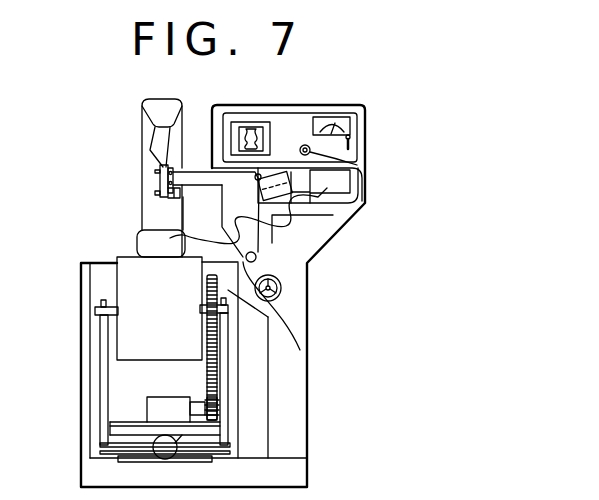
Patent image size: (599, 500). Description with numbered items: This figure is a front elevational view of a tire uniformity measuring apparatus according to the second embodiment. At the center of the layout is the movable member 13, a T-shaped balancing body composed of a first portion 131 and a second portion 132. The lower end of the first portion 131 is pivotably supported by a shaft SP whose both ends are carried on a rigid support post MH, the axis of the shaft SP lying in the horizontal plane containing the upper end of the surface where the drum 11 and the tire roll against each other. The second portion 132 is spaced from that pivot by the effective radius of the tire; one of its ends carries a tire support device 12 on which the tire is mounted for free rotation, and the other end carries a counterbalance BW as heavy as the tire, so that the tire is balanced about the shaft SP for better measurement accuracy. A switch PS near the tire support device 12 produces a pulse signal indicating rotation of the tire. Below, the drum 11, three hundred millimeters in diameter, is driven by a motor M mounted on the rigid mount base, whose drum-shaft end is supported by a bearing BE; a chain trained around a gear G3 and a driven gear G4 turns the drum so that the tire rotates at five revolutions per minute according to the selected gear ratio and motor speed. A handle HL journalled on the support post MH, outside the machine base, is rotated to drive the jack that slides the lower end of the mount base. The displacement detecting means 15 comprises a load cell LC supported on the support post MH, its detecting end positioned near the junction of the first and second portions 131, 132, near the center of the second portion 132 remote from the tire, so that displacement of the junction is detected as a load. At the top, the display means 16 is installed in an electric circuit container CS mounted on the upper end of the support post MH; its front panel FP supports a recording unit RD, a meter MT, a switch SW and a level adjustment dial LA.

The displacement detecting means 15 is at (376, 210).
The display means 16 is at (327, 90).
The front panel FP is at (290, 122).
The recording unit RD is at (249, 123).
The meter MT is at (332, 118).
The electric circuit container CS is at (352, 127).
The switch SW is at (356, 144).
The level adjustment dial LA is at (358, 176).
The load cell LC is at (262, 178).
The counterbalance BW is at (330, 205).
The second portion 132 is at (193, 177).
The movable member 13 is at (203, 180).
The tire support device 12 is at (158, 179).
The switch PS is at (160, 196).
The first portion 131 is at (137, 243).
The drum 11 is at (174, 326).
The shaft SP is at (235, 265).
The bearing BE is at (100, 306).
The motor M is at (155, 403).
The gear G3 is at (206, 398).
The support post MH is at (258, 408).
The driven gear G4 is at (258, 302).
The handle HL is at (280, 274).